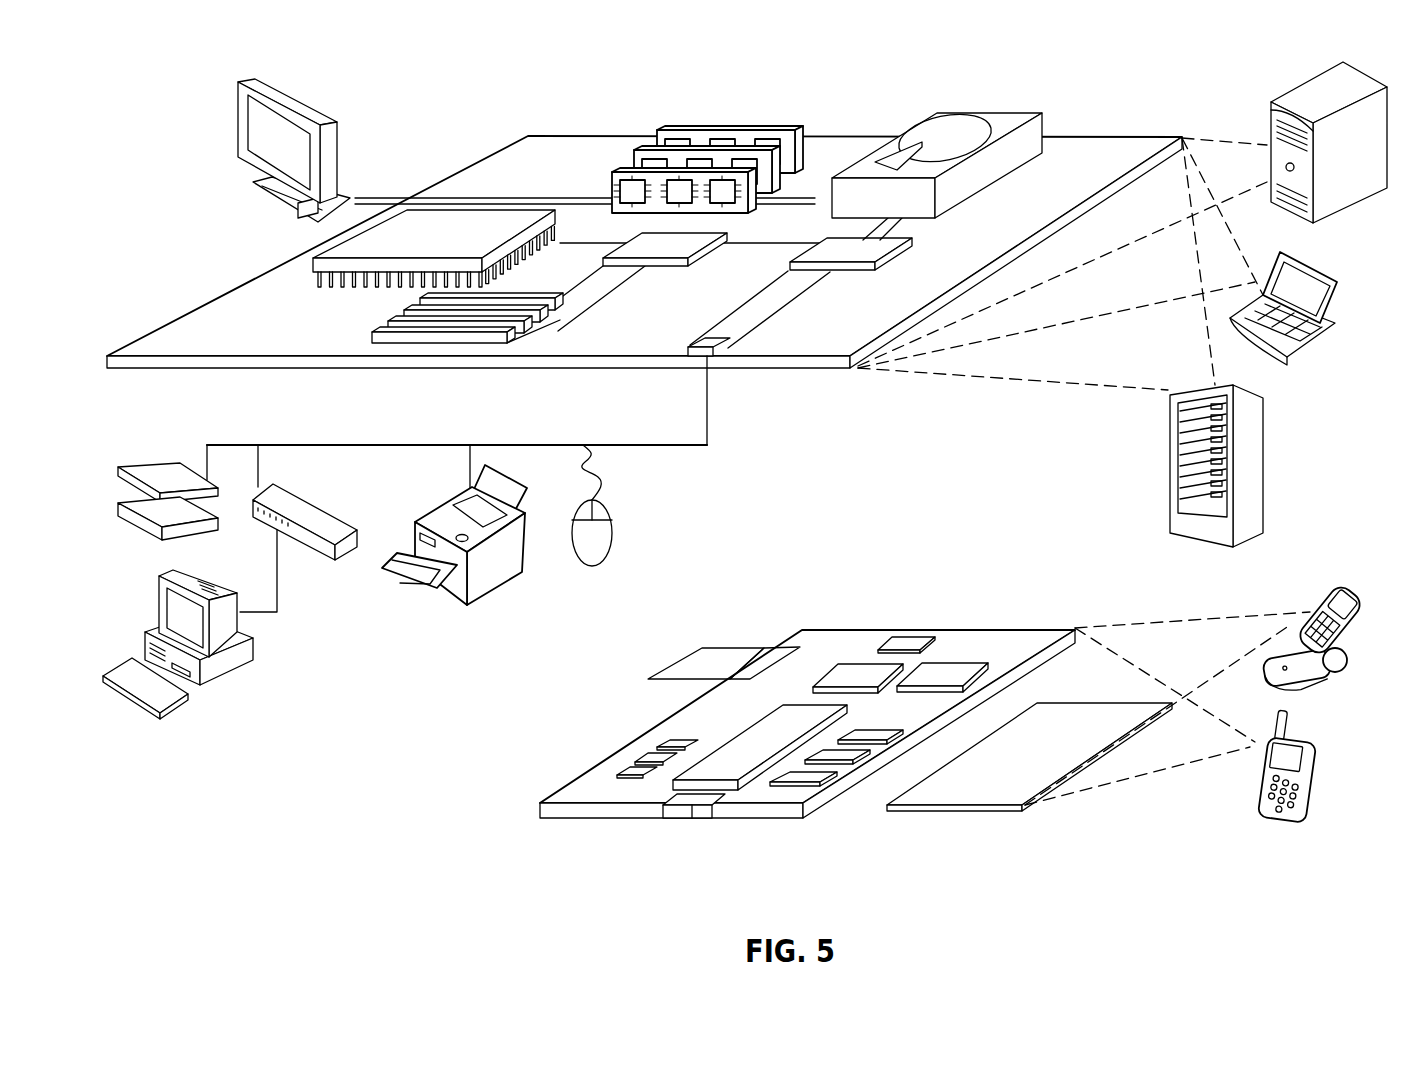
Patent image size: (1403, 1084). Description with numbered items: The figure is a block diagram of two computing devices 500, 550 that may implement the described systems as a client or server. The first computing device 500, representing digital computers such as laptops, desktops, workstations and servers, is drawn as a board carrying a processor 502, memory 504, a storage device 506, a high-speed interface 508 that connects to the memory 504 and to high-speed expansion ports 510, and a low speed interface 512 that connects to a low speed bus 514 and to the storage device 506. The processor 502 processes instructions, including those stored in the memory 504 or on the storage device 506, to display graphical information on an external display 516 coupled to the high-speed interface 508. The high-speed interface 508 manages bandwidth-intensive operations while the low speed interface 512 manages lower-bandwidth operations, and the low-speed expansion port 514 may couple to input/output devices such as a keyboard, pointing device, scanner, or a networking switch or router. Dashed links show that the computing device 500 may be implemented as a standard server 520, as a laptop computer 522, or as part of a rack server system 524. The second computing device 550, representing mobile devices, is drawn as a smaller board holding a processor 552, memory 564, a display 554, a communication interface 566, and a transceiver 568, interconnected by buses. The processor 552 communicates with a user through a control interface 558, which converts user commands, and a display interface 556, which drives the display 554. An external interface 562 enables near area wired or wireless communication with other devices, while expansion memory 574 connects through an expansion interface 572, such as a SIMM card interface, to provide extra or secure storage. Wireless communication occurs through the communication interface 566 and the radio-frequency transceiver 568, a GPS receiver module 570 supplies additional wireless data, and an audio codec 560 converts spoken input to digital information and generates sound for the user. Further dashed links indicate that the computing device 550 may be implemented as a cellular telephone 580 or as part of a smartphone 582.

The computing device 500 is at (452, 106).
The processor 502 is at (313, 261).
The memory 504 is at (668, 126).
The storage device 506 is at (922, 113).
The high-speed interface 508 is at (640, 247).
The high-speed expansion ports 510 is at (373, 325).
The low speed interface 512 is at (826, 247).
The low-speed expansion port 514 is at (722, 357).
The display 516 is at (248, 82).
The standard server 520 is at (1271, 118).
The laptop computer 522 is at (1335, 247).
The rack server system 524 is at (1170, 493).
The computing device 550 is at (512, 817).
The processor 552 is at (728, 770).
The display 554 is at (987, 792).
The display interface 556 is at (807, 780).
The control interface 558 is at (840, 763).
The audio codec 560 is at (867, 733).
The external interface 562 is at (692, 805).
The memory 564 is at (637, 764).
The communication interface 566 is at (860, 673).
The transceiver 568 is at (945, 672).
The GPS receiver module 570 is at (905, 640).
The expansion interface 572 is at (780, 647).
The expansion memory 574 is at (705, 647).
The cellular telephone 580 is at (1305, 555).
The smartphone 582 is at (1255, 786).